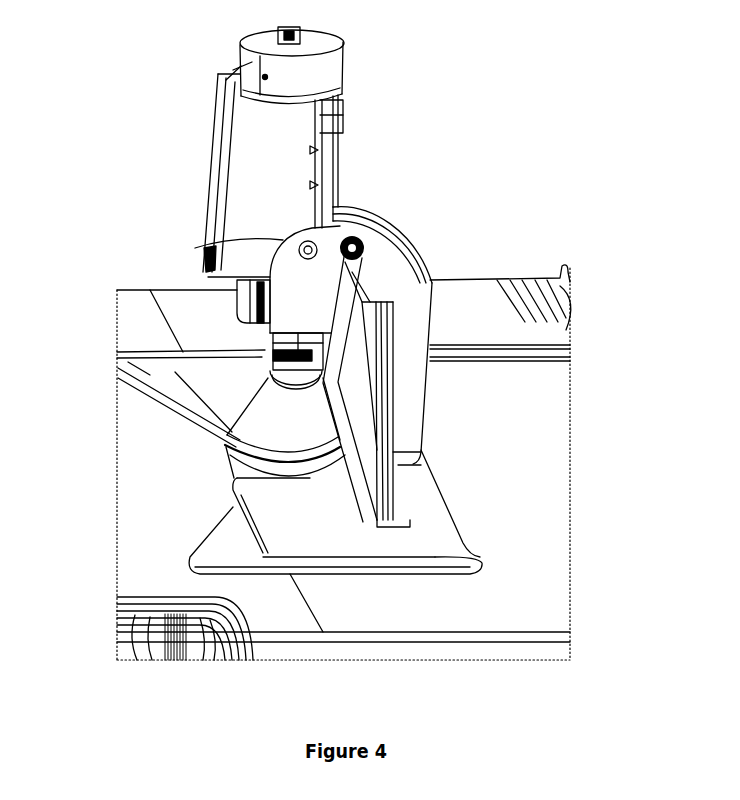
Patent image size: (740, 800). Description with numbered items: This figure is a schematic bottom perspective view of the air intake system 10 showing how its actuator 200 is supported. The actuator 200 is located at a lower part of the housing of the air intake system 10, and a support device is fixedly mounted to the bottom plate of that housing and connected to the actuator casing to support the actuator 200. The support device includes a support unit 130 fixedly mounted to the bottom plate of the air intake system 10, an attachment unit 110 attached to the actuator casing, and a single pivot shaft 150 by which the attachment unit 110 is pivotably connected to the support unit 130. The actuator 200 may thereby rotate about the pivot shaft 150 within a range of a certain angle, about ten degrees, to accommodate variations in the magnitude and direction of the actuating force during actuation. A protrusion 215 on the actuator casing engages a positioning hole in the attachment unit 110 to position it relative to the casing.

The air intake system 10 is at (522, 592).
The attachment unit 110 is at (283, 305).
The support unit 130 is at (437, 415).
The pivot shaft 150 is at (364, 240).
The actuator 200 is at (255, 166).
The protrusion 215 is at (207, 252).